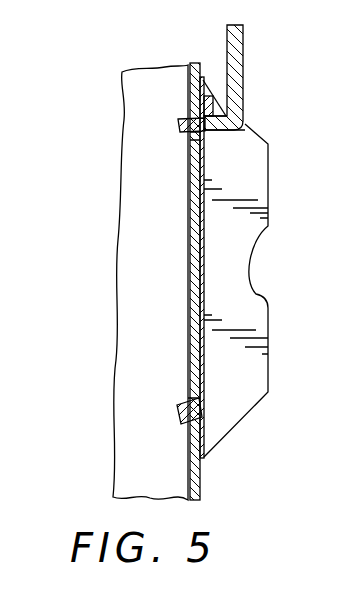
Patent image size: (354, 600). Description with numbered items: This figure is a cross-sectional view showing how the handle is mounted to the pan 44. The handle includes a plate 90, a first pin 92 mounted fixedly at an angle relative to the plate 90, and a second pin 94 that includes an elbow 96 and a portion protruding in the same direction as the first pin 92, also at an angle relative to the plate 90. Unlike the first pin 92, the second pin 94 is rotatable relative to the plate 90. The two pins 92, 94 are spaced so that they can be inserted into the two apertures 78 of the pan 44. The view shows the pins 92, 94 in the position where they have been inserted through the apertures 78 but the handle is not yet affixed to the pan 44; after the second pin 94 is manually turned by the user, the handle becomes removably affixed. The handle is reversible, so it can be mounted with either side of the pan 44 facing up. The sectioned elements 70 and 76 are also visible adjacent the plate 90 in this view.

The pan 44 is at (122, 249).
The plate 70 is at (243, 298).
The sealing strip 76 is at (190, 229).
The apertures 78 is at (191, 140).
The plate 90 is at (205, 182).
The pin 92 is at (185, 405).
The second pin 94 is at (185, 120).
The elbow 96 is at (250, 53).